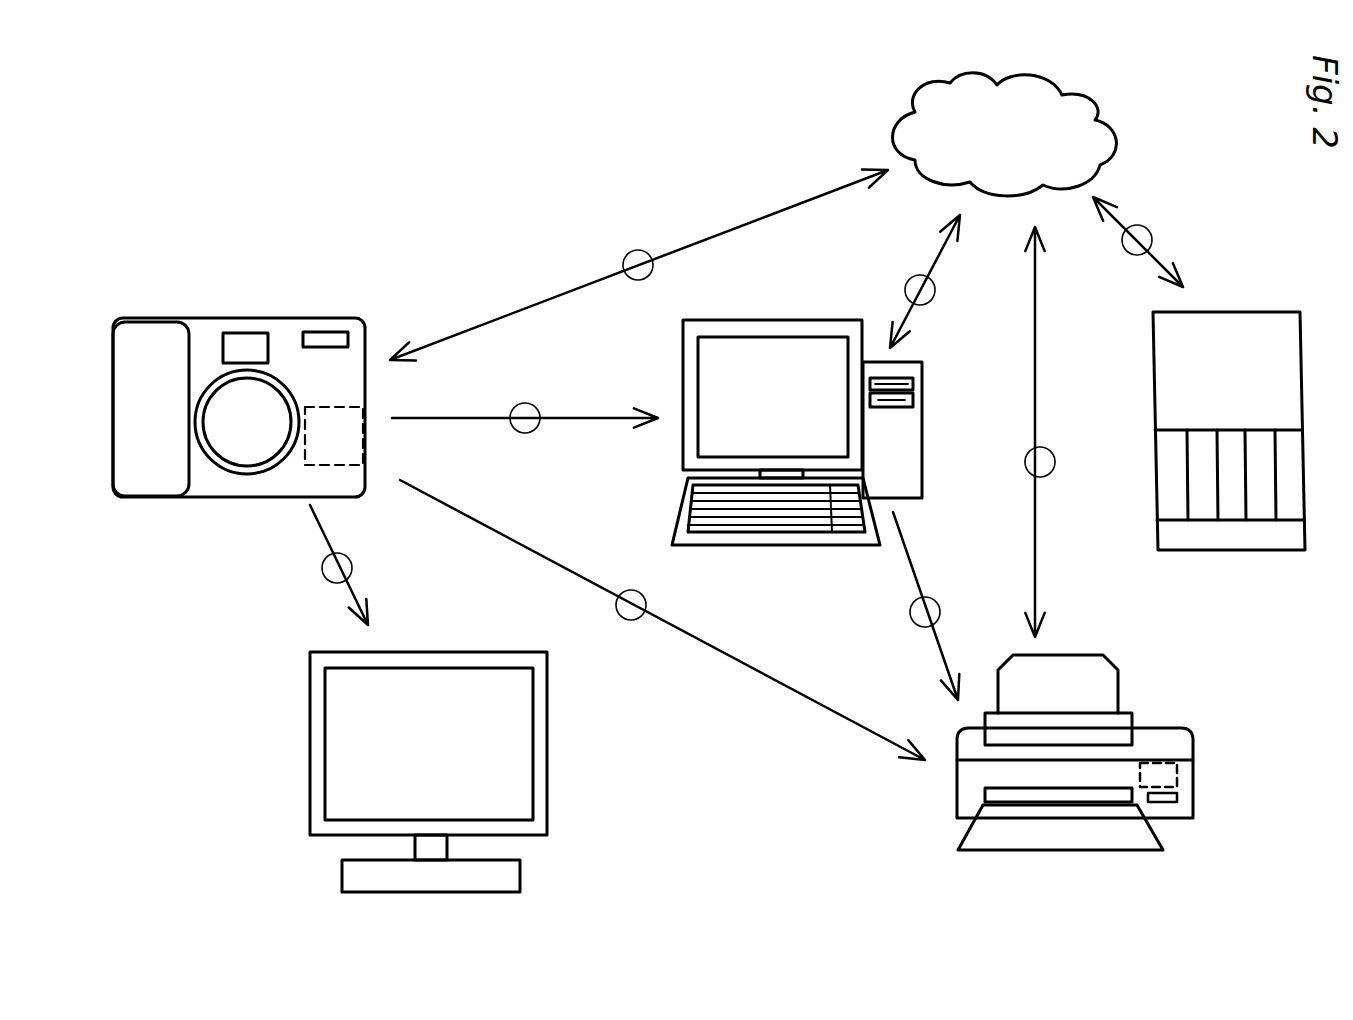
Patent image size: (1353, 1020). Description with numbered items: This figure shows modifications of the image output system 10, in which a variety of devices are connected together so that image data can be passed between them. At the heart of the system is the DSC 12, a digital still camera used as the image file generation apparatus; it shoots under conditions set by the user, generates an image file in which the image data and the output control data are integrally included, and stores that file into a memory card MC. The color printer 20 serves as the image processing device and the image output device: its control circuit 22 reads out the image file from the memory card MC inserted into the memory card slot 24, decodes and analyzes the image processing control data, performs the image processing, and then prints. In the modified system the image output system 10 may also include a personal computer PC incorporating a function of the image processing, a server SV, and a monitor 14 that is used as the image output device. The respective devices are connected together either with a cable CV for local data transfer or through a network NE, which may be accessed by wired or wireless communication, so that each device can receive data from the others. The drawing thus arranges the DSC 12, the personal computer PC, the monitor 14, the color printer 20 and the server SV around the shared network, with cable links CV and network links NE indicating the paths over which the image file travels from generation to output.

The image output system 10 is at (709, 482).
The DSC 12 is at (260, 317).
The monitor 14 is at (820, 318).
The color printer 20 is at (1165, 728).
The control circuit 22 is at (1177, 772).
The memory card slot 24 is at (1177, 795).
The memory card MC is at (365, 441).
The personal computer PC is at (922, 412).
The server SV is at (1245, 310).
The network NE is at (786, 404).
The cable CV is at (618, 568).